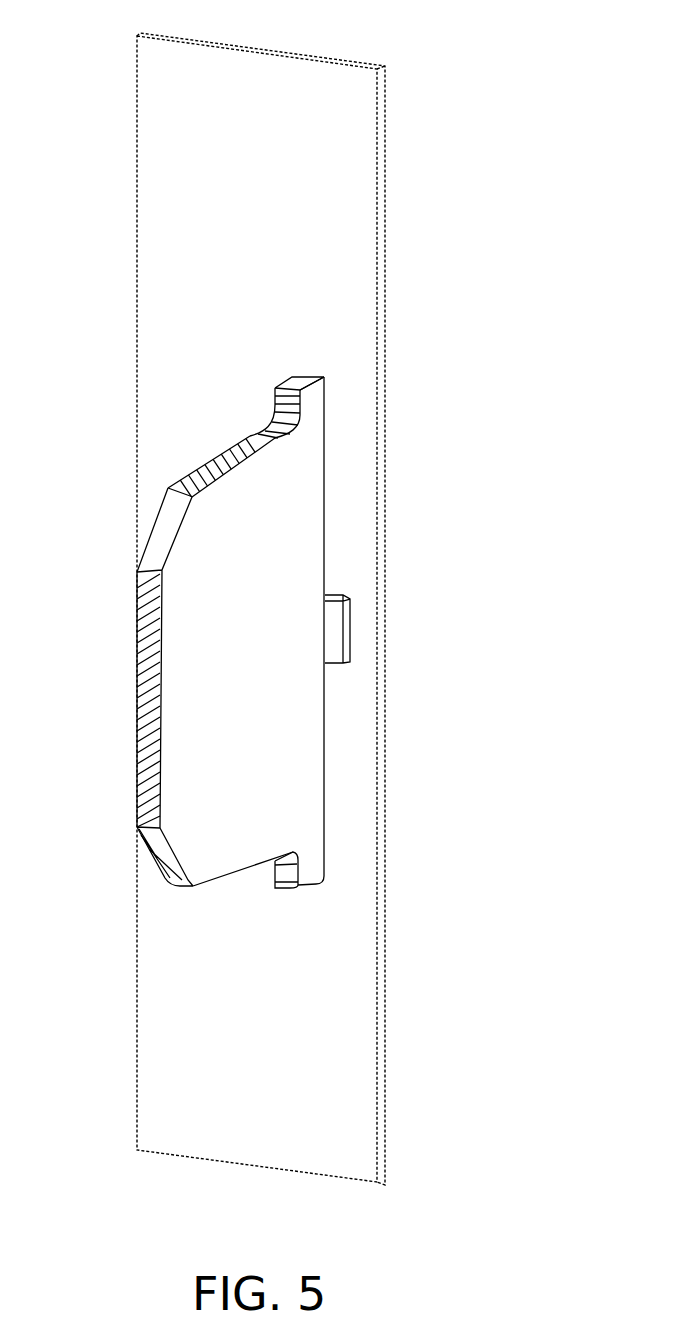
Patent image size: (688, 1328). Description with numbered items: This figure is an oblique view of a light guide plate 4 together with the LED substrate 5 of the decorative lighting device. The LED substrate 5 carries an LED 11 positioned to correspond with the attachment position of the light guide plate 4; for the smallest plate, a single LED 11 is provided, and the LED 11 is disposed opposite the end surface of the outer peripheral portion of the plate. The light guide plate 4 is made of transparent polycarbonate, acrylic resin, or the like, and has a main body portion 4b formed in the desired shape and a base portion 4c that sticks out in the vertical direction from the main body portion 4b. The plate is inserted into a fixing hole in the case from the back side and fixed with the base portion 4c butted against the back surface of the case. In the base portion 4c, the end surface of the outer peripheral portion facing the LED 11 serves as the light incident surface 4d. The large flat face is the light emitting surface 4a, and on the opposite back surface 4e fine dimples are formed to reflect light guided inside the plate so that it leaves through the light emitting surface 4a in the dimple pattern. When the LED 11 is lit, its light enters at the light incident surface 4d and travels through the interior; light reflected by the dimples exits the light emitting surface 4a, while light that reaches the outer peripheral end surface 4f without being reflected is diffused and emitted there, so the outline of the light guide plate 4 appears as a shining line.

The LED substrate 5 is at (331, 86).
The light guide plate 4 is at (274, 611).
The light emitting surface 4a is at (277, 715).
The main body portion 4b is at (270, 405).
The base portion 4c is at (272, 381).
The light incident surface 4d is at (327, 540).
The back surface 4e is at (138, 647).
The outer peripheral end surface 4f is at (148, 708).
The LED 11 is at (335, 628).